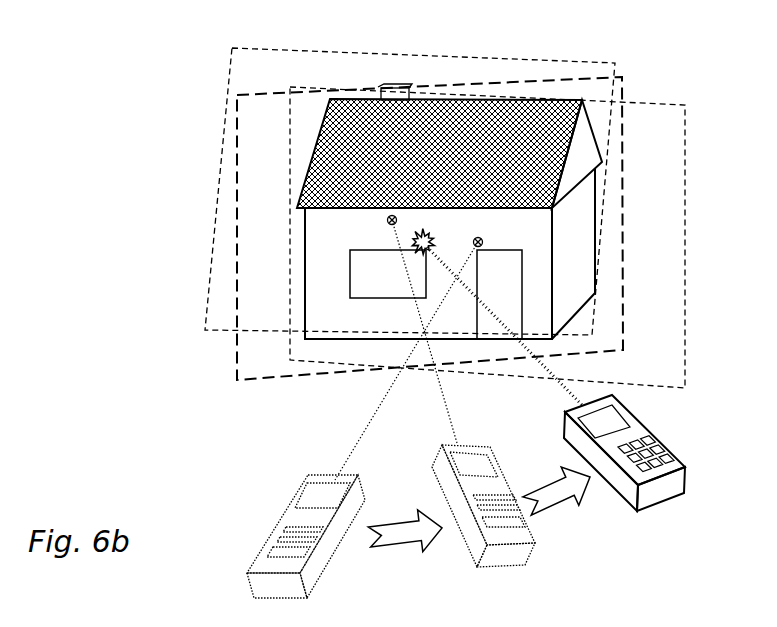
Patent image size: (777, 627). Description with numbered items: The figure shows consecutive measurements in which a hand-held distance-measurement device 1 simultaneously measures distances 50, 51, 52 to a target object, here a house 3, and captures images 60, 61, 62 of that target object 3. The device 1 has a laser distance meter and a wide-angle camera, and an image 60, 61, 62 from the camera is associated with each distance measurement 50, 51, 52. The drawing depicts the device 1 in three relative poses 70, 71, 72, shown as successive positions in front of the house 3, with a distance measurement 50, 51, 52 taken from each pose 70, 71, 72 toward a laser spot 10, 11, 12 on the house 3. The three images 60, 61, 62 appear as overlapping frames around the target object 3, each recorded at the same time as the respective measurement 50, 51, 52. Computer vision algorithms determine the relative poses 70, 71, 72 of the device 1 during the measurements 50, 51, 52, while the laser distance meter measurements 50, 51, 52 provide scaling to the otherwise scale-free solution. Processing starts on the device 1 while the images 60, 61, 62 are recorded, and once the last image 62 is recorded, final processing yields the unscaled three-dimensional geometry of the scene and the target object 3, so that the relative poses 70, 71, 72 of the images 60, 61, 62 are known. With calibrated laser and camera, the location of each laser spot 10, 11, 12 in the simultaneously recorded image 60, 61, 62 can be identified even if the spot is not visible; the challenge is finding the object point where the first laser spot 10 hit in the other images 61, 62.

The hand-held distance-measurement device 1 is at (642, 462).
The target object 3 is at (479, 233).
The first laser spot 10 is at (513, 241).
The laser spot 11 is at (358, 233).
The laser spot 12 is at (448, 233).
The distance measurement 50 is at (377, 361).
The distance measurement 51 is at (424, 335).
The distance measurement 52 is at (505, 343).
The image 60 is at (518, 237).
The image 61 is at (381, 210).
The last image 62 is at (392, 247).
The relative pose 70 is at (238, 545).
The relative pose 71 is at (455, 523).
The relative pose 72 is at (588, 530).